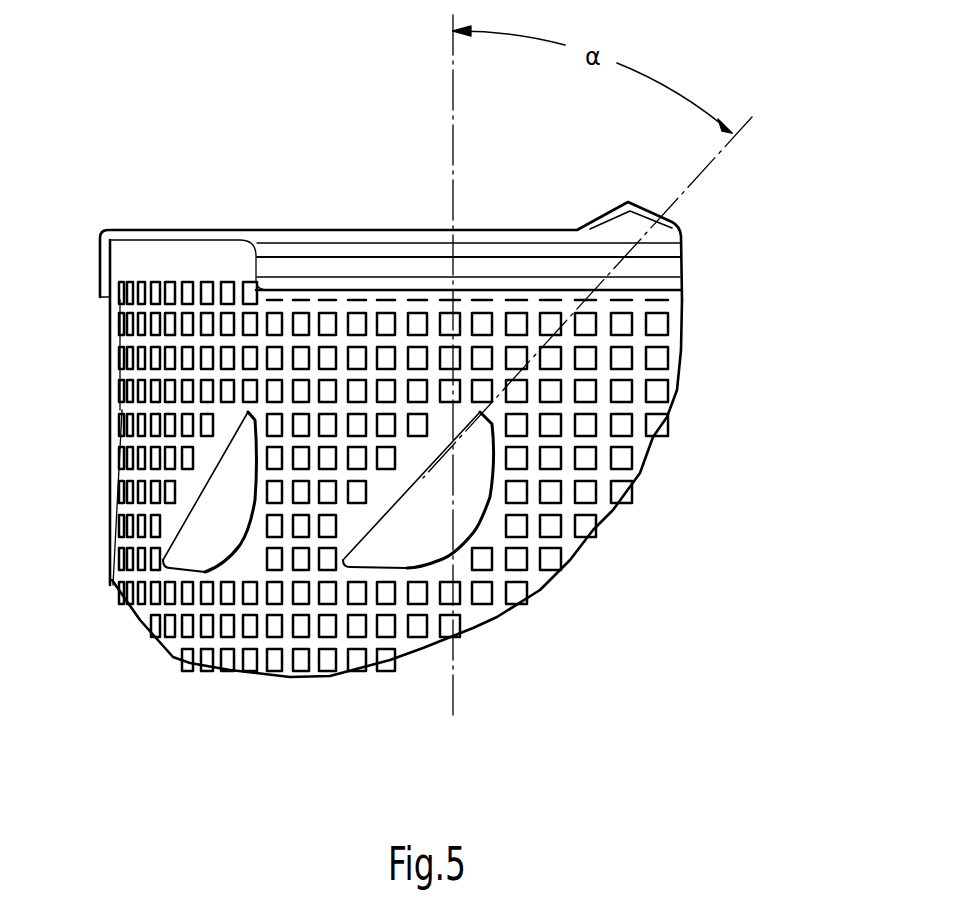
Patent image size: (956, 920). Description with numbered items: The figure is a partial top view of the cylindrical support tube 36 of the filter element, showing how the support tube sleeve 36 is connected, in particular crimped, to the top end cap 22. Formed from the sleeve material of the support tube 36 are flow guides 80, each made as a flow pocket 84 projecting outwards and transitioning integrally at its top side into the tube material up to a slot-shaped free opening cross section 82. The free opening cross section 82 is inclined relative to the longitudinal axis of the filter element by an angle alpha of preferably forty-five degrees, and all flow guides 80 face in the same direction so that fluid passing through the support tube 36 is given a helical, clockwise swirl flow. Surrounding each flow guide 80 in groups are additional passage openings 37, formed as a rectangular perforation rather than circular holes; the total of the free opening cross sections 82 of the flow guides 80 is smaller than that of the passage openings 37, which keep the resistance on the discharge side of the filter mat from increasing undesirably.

The top end cap 22 is at (283, 230).
The support tube 36 is at (673, 328).
The passage openings 37 is at (198, 300).
The flow guide 80 is at (185, 550).
The free opening cross section 82 is at (228, 447).
The flow pocket 84 is at (200, 520).